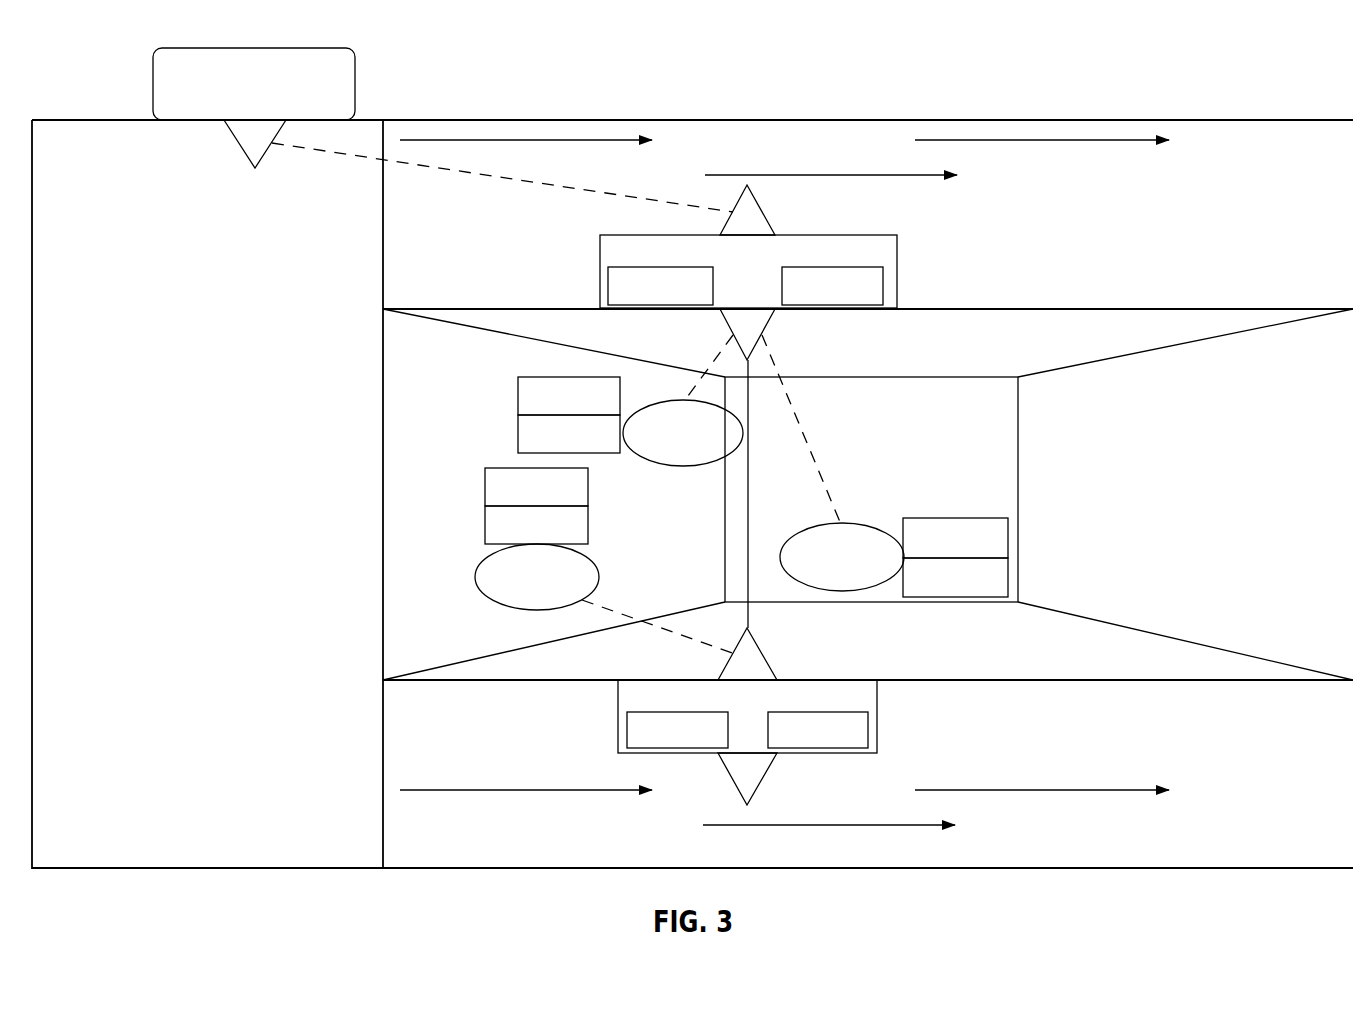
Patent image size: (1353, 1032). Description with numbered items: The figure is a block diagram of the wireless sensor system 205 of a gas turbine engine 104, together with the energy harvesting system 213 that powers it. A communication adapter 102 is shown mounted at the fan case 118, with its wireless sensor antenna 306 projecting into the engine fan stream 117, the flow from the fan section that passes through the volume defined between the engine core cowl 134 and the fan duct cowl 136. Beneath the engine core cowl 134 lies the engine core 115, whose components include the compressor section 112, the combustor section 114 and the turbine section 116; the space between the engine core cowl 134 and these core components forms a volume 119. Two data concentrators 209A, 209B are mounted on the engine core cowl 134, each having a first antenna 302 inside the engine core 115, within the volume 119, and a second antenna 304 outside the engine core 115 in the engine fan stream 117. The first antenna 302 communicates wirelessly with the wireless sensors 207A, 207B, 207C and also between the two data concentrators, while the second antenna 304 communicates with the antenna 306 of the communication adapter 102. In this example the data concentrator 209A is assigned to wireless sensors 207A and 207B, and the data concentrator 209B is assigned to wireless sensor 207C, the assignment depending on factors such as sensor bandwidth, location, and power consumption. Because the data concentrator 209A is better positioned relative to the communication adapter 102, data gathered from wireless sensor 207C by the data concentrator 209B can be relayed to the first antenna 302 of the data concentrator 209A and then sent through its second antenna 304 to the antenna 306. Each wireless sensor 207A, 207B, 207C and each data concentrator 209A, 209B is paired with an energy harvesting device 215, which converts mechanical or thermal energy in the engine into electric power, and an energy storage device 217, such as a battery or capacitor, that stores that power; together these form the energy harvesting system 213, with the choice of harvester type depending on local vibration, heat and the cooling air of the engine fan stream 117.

The communication adapter 102 is at (203, 47).
The gas turbine engine 104 is at (1250, 76).
The compressor section 112 is at (472, 377).
The combustor section 114 is at (892, 472).
The engine core 115 is at (1155, 667).
The turbine section 116 is at (1210, 488).
The engine fan stream 117 is at (1302, 188).
The fan case 118 is at (228, 815).
The volume 119 is at (983, 357).
The engine core cowl 134 is at (1080, 309).
The fan duct cowl 136 is at (950, 868).
The wireless sensor system 205 is at (930, 435).
The wireless sensor 207A is at (683, 468).
The wireless sensor 207B is at (855, 523).
The wireless sensor 207C is at (498, 607).
The data concentrator 209A is at (780, 302).
The data concentrator 209B is at (877, 716).
The energy harvesting system 213 is at (1005, 498).
The energy harvesting device 215 is at (707, 302).
The energy storage device 217 is at (880, 302).
The first antenna 302 is at (766, 325).
The second antenna 304 is at (762, 211).
The wireless sensor antenna 306 is at (242, 150).